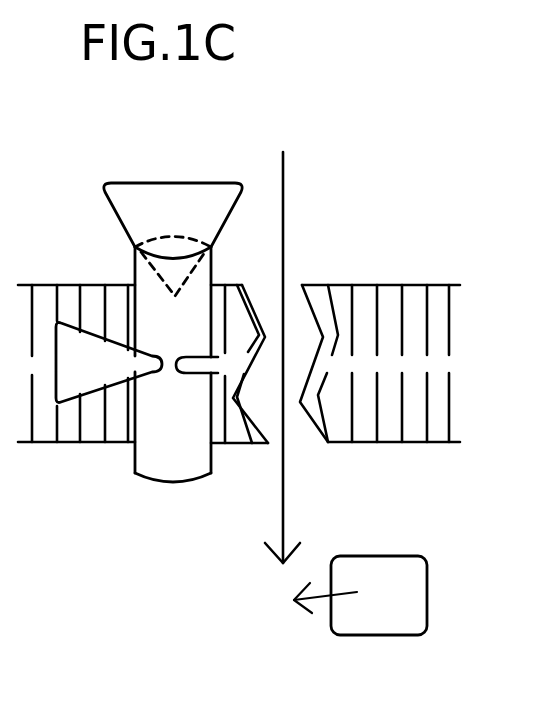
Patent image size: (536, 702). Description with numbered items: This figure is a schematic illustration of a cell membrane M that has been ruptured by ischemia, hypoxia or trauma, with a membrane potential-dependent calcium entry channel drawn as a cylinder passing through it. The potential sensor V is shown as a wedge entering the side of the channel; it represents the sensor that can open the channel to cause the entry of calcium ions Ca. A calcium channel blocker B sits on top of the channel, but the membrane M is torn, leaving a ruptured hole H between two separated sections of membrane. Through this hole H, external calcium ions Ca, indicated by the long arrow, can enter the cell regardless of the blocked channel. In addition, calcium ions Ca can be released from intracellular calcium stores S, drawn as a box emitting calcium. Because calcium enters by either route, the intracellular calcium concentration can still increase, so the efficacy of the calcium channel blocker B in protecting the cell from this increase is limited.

The calcium channel blocker B is at (173, 332).
The potential sensor V is at (109, 363).
The cell membrane M is at (239, 343).
The ruptured hole H is at (293, 360).
The calcium ions Ca is at (280, 338).
The intracellular calcium stores S is at (373, 595).